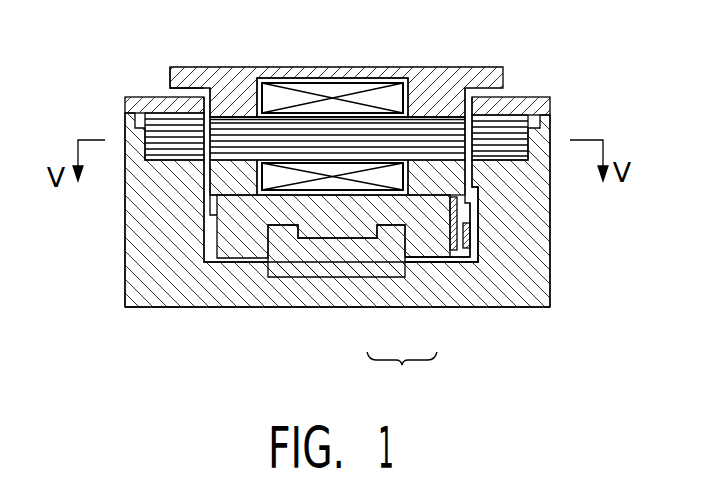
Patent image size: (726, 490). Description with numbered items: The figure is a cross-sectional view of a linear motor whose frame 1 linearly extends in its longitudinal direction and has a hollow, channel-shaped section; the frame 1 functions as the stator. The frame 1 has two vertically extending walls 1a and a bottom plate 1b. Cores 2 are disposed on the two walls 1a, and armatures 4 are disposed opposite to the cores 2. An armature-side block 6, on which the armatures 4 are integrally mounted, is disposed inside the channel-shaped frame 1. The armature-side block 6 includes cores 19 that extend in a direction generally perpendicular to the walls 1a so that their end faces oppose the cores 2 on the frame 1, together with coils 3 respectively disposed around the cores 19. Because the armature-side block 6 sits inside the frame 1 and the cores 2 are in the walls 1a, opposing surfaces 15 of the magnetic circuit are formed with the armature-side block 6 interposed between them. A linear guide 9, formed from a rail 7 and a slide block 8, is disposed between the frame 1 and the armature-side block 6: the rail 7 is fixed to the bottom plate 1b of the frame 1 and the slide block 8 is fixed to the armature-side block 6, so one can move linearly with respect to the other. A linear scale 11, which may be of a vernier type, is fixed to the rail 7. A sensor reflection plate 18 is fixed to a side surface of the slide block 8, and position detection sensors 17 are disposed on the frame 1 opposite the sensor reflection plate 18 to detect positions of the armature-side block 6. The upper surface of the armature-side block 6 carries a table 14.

The frame 1 is at (165, 294).
The walls 1a is at (540, 197).
The bottom plate 1b is at (248, 300).
The cores 2 is at (165, 151).
The coils 3 is at (340, 88).
The armatures 4 is at (425, 108).
The armature-side block 6 is at (232, 82).
The rail 7 is at (402, 262).
The slide block 8 is at (432, 258).
The linear guide 9 is at (402, 372).
The linear scale 11 is at (313, 242).
The table 14 is at (174, 79).
The opposing surfaces 15 is at (208, 72).
The position detection sensors 17 is at (471, 236).
The sensor reflection plate 18 is at (455, 258).
The cores 19 is at (238, 122).